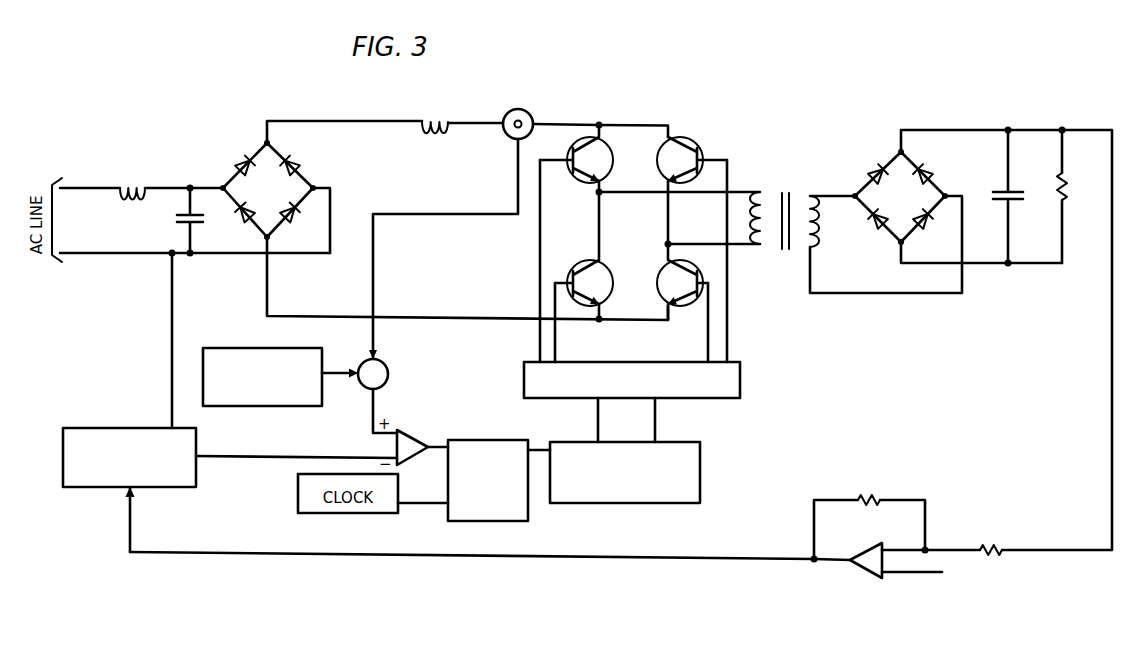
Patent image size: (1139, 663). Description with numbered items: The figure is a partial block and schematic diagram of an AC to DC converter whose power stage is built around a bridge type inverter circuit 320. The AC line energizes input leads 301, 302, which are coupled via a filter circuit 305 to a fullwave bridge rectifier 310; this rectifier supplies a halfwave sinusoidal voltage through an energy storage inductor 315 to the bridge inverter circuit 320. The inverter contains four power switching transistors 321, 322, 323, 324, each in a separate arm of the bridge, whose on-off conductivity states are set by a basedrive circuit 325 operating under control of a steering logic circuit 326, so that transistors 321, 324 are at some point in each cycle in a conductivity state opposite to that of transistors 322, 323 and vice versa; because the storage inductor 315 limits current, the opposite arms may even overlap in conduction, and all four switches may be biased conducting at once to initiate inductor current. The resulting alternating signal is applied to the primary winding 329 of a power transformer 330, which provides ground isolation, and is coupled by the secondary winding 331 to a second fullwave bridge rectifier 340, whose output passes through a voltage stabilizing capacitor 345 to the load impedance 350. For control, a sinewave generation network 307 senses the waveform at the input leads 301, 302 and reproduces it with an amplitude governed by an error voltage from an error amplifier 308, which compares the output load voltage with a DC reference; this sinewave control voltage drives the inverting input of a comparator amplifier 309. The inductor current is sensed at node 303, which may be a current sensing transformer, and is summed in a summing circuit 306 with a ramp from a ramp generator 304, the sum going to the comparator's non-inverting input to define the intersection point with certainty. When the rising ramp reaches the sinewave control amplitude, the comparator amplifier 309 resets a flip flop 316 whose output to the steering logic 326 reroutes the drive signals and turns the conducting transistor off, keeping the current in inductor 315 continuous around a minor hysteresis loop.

The input lead 301 is at (78, 188).
The input lead 302 is at (70, 255).
The node 303 is at (528, 112).
The ramp generator 304 is at (262, 406).
The filter circuit 305 is at (146, 238).
The summing circuit 306 is at (388, 369).
The sinewave generation network 307 is at (196, 440).
The error amplifier 308 is at (860, 577).
The comparator amplifier 309 is at (403, 432).
The fullwave bridge rectifier 310 is at (281, 209).
The energy storage inductor 315 is at (436, 122).
The flip flop 316 is at (468, 440).
The bridge inverter circuit 320 is at (650, 222).
The power switching transistor 321 is at (612, 147).
The power switching transistor 322 is at (612, 283).
The power switching transistor 323 is at (660, 164).
The power switching transistor 324 is at (660, 298).
The basedrive circuit 325 is at (740, 388).
The steering logic circuit 326 is at (700, 483).
The primary winding 329 is at (757, 248).
The power transformer 330 is at (799, 225).
The secondary winding 331 is at (815, 247).
The fullwave bridge rectifier 340 is at (911, 211).
The voltage stabilizing capacitor 345 is at (1017, 182).
The load impedance 350 is at (1072, 175).